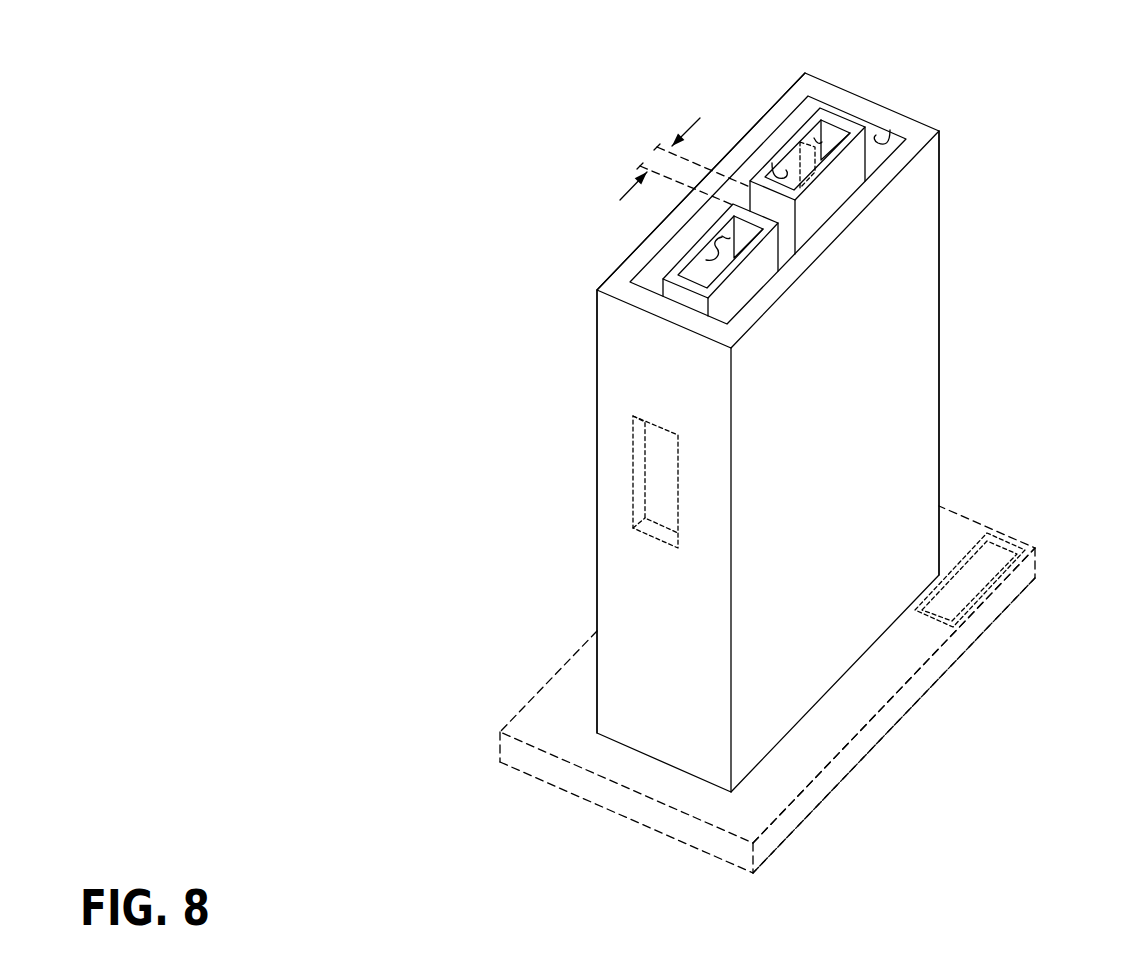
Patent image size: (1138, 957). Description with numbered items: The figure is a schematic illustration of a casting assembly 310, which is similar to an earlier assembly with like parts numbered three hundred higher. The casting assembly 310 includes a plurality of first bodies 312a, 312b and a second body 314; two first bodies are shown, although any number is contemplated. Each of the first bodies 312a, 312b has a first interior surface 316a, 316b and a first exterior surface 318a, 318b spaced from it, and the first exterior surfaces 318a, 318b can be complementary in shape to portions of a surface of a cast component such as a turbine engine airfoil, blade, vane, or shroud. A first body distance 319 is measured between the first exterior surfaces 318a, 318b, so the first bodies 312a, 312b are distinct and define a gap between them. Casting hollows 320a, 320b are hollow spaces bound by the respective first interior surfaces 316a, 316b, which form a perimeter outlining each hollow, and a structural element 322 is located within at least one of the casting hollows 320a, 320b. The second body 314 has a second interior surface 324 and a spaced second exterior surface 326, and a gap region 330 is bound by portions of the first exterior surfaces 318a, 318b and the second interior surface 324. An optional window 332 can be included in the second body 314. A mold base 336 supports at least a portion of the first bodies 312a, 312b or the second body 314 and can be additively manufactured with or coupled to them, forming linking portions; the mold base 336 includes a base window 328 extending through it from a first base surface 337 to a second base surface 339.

The casting assembly 310 is at (560, 357).
The first body 312a is at (840, 115).
The first body 312b is at (762, 248).
The second body 314 is at (940, 415).
The first interior surface 316a is at (818, 143).
The first interior surface 316b is at (730, 239).
The first exterior surface 318a is at (820, 120).
The first exterior surface 318b is at (747, 262).
The first body distance 319 is at (637, 178).
The casting hollow 320a is at (778, 163).
The casting hollow 320b is at (707, 249).
The structural element 322 is at (800, 143).
The second interior surface 324 is at (663, 268).
The second exterior surface 326 is at (597, 290).
The base window 328 is at (985, 590).
The gap region 330 is at (888, 133).
The window 332 is at (632, 495).
The mold base 336 is at (497, 749).
The first base surface 337 is at (808, 818).
The second base surface 339 is at (787, 838).